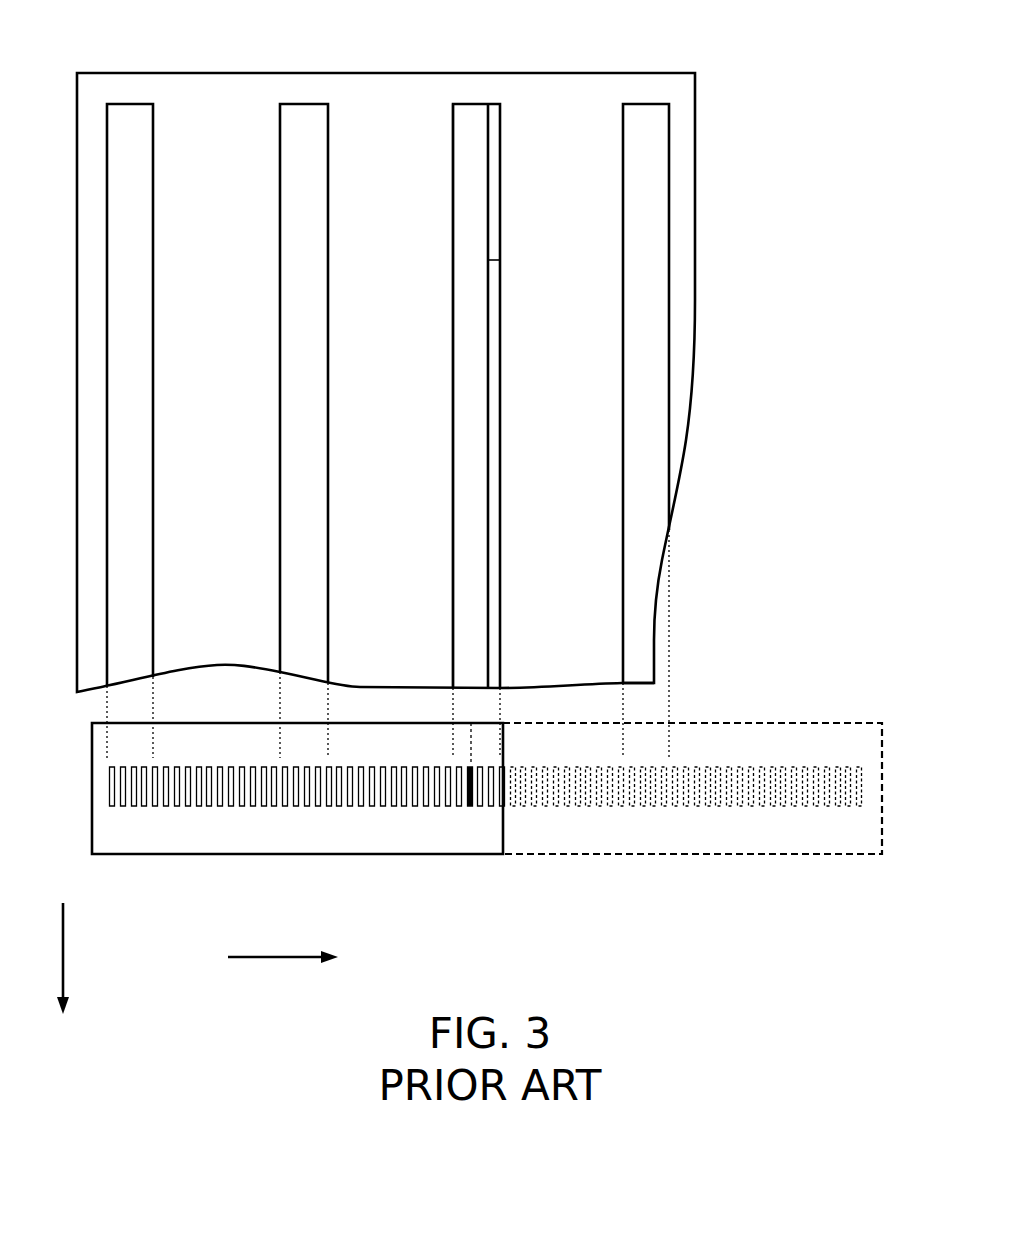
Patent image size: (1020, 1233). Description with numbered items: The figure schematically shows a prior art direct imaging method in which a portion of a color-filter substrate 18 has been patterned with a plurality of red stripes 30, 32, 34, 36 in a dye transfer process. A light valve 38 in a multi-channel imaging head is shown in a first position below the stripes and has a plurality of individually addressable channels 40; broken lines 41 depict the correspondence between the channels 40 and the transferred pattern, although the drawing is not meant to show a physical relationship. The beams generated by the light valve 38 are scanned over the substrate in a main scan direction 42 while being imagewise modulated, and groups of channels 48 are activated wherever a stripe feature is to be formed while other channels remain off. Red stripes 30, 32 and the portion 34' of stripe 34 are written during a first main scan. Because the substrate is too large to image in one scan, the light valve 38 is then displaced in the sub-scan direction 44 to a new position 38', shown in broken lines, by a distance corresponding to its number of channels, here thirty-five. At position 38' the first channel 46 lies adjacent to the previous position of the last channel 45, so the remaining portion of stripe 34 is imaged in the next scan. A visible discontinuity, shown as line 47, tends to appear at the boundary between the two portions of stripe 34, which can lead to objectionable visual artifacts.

The color-filter substrate 18 is at (566, 91).
The red stripe 30 is at (130, 104).
The red stripe 32 is at (306, 104).
The red stripe 34 is at (476, 381).
The portion of stripe 34' is at (427, 396).
The red stripe 36 is at (649, 104).
The light valve 38 is at (276, 810).
The new position of light valve 38' is at (727, 788).
The individually addressable channels 40 is at (232, 807).
The broken lines 41 is at (623, 712).
The main scan direction 42 is at (63, 950).
The sub-scan direction 44 is at (266, 955).
The last channel 45 is at (470, 808).
The first channel 46 is at (113, 807).
The line 47 is at (491, 261).
The groups of channels 48 is at (279, 825).